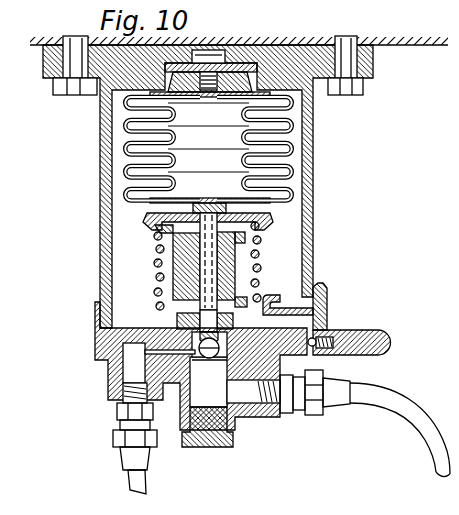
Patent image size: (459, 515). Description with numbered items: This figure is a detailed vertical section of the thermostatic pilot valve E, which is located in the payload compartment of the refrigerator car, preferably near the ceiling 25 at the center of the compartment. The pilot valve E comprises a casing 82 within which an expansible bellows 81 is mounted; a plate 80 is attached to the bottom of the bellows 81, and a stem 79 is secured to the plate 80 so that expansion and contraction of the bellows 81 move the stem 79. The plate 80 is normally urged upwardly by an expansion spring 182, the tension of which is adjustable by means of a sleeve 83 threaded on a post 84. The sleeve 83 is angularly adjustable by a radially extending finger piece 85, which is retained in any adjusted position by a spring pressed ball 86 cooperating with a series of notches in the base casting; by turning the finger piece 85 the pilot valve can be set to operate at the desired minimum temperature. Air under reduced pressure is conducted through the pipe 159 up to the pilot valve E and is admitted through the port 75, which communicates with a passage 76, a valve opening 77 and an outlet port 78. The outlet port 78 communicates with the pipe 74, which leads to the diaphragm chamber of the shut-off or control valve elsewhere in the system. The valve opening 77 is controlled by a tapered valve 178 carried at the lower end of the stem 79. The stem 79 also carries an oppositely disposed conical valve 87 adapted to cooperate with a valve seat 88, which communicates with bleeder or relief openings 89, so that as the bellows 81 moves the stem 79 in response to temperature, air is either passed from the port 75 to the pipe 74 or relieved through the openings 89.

The ceiling 25 is at (386, 43).
The thermostatic pilot valve E is at (102, 172).
The casing 82 is at (313, 125).
The expansible bellows 81 is at (127, 141).
The plate 80 is at (263, 212).
The post 84 is at (157, 277).
The bleeder or relief openings 89 is at (160, 293).
The expansion spring 182 is at (155, 246).
The stem 79 is at (247, 258).
The conical valve 87 is at (230, 316).
The sleeve 83 is at (258, 281).
The outlet port 78 is at (165, 330).
The valve seat 88 is at (158, 352).
The valve opening 77 is at (208, 360).
The passage 76 is at (205, 425).
The port 75 is at (247, 397).
The tapered valve 178 is at (275, 367).
The pipe 159 is at (423, 422).
The pipe 74 is at (128, 483).
The finger piece 85 is at (378, 331).
The spring pressed ball 86 is at (328, 334).